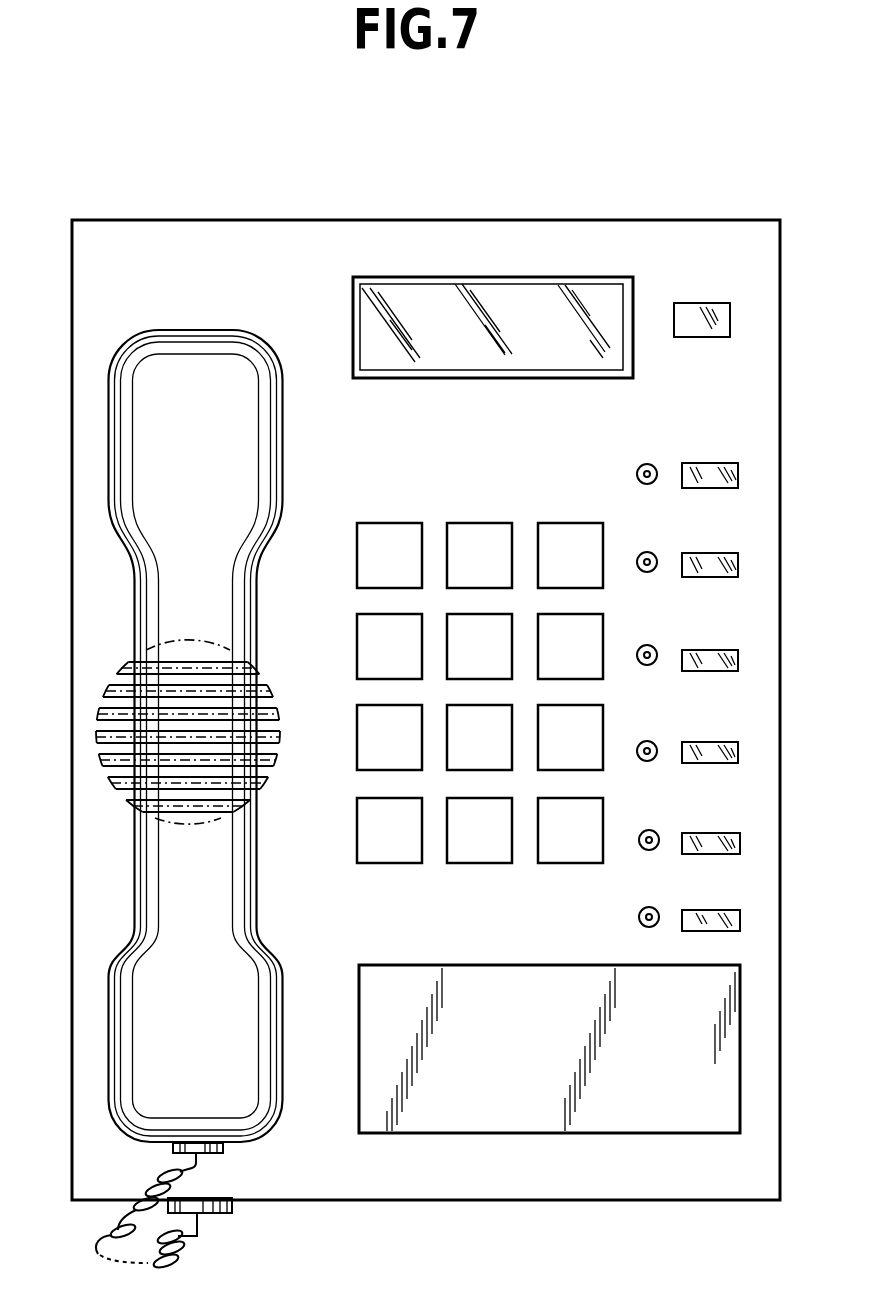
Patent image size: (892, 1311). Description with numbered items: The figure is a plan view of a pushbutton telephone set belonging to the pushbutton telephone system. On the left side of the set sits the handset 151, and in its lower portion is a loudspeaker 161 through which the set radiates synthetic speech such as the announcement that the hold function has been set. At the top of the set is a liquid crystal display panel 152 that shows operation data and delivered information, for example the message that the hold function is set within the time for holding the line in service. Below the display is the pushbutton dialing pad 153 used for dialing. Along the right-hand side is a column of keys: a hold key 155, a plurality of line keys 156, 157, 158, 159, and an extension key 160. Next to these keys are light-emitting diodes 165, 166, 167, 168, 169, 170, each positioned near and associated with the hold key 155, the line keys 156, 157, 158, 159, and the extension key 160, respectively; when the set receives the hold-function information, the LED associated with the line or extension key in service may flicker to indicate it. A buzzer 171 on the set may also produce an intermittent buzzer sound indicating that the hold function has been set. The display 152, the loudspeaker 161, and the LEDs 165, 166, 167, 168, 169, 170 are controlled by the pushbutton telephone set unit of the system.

The handset 151 is at (283, 432).
The liquid crystal display (LCD) panel 152 is at (603, 277).
The pushbutton dialing pad 153 is at (605, 516).
The hold key 155 is at (738, 476).
The line key 156 is at (738, 564).
The line key 157 is at (738, 660).
The line key 158 is at (738, 752).
The line key 159 is at (740, 841).
The extension key 160 is at (740, 921).
The loudspeaker 161 is at (100, 757).
The light-emitting diode (LED) 165 is at (652, 462).
The light-emitting diode (LED) 166 is at (647, 551).
The light-emitting diode (LED) 167 is at (647, 644).
The light-emitting diode (LED) 168 is at (647, 740).
The light-emitting diode (LED) 169 is at (649, 829).
The light-emitting diode (LED) 170 is at (649, 906).
The buzzer 171 is at (730, 318).